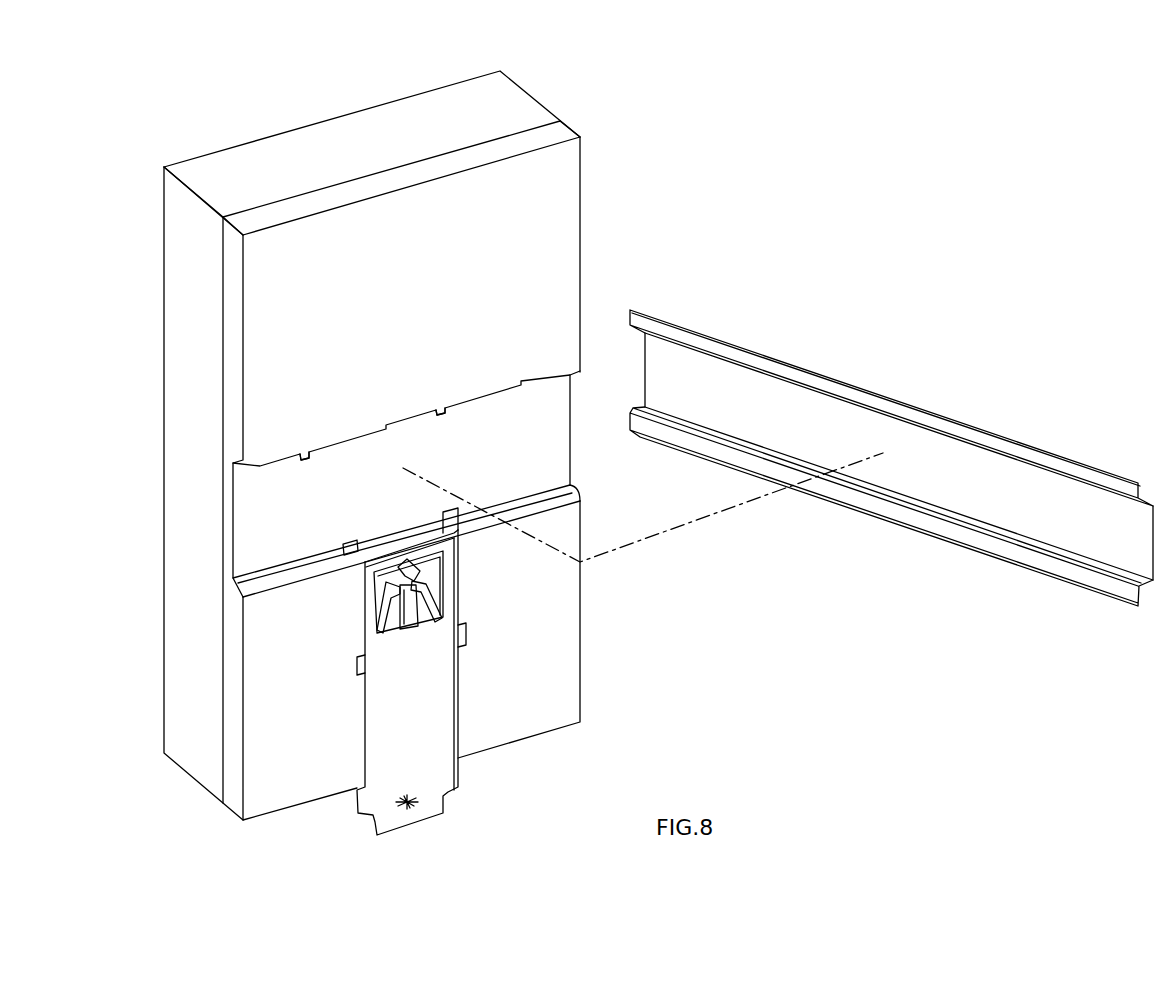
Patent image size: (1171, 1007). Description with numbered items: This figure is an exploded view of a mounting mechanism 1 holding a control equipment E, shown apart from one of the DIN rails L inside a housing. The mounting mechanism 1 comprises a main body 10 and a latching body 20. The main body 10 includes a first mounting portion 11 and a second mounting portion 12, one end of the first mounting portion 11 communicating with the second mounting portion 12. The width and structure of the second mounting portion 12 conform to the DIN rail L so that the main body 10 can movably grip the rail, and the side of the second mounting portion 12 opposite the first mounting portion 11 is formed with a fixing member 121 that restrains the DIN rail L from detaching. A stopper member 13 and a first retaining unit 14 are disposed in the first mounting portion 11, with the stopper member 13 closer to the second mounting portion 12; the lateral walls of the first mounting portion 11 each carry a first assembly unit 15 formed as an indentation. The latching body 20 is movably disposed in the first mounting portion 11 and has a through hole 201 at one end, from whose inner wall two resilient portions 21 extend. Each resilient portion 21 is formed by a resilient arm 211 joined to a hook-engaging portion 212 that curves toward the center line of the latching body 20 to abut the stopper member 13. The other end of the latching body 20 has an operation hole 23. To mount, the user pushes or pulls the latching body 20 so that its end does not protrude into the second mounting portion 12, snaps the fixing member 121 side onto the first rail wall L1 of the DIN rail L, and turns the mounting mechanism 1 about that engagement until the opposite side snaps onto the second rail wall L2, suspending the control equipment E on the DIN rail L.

The control equipment E is at (524, 104).
The mounting mechanism 1 is at (587, 208).
The main body 10 is at (567, 289).
The fixing member 121 is at (482, 406).
The second mounting portion 12 is at (557, 433).
The first mounting portion 11 is at (460, 700).
The latching body 20 is at (390, 667).
The through hole 201 is at (448, 566).
The resilient portion 21 is at (383, 569).
The stopper member 13 is at (410, 568).
The hook-engaging portion 212 is at (394, 596).
The resilient arm 211 is at (390, 614).
The first retaining unit 14 is at (436, 600).
The first assembly unit 15 is at (466, 636).
The operation hole 23 is at (414, 803).
The DIN rail L is at (891, 476).
The first rail wall L1 is at (1040, 455).
The second rail wall L2 is at (1068, 578).